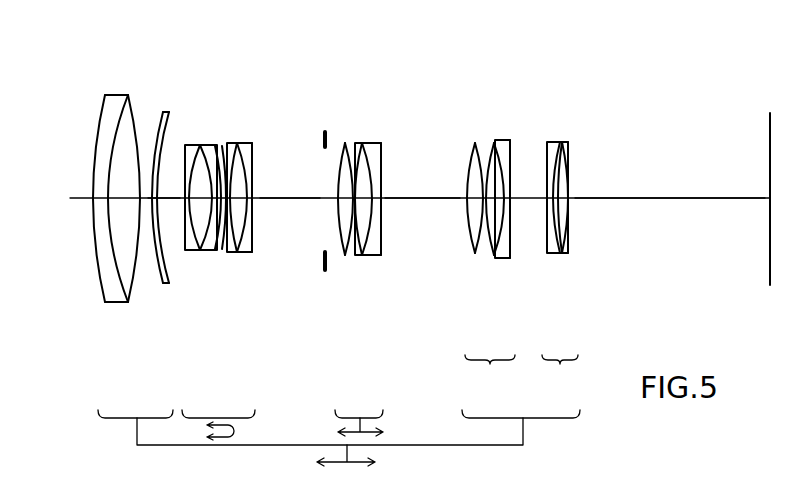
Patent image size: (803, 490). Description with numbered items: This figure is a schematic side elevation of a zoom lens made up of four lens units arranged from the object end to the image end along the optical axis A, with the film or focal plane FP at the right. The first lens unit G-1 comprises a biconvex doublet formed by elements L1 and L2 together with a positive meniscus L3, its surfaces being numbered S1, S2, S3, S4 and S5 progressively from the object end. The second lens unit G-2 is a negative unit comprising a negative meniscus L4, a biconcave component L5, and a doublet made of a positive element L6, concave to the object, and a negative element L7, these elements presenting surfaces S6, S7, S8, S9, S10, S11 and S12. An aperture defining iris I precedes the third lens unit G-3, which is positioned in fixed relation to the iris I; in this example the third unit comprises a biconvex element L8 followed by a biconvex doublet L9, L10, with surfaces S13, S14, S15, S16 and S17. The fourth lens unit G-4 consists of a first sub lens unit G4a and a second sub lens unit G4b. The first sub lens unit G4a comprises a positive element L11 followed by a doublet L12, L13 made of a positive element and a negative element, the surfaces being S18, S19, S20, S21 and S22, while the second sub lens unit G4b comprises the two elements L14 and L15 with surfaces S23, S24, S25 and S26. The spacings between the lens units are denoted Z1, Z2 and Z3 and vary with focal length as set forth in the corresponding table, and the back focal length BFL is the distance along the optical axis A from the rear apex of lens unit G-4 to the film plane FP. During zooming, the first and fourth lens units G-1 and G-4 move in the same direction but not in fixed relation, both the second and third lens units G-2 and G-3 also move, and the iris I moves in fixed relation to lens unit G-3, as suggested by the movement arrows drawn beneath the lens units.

The optical axis A is at (717, 200).
The focal plane FP is at (770, 136).
The back focal length BFL is at (670, 186).
The spacing between lens units Z1 is at (164, 188).
The spacing between lens units Z2 is at (290, 188).
The spacing between lens units Z3 is at (422, 188).
The iris I is at (320, 137).
The first lens unit G-1 is at (172, 45).
The second lens unit G-2 is at (263, 45).
The third lens unit G-3 is at (393, 45).
The fourth lens unit G-4 is at (583, 45).
The first sub lens unit G4a is at (490, 373).
The second sub lens unit G4b is at (560, 373).
The lens element L1 is at (87, 193).
The lens element L2 is at (104, 203).
The positive meniscus L3 is at (156, 226).
The negative meniscus L4 is at (195, 218).
The biconcave component L5 is at (238, 208).
The positive element L6 is at (264, 192).
The negative element L7 is at (271, 195).
The biconvex element L8 is at (360, 218).
The lens element L9 is at (392, 195).
The lens element L10 is at (399, 197).
The positive element L11 is at (458, 205).
The lens element L12 is at (514, 212).
The lens element L13 is at (527, 192).
The lens element L14 is at (593, 200).
The lens element L15 is at (605, 196).
The lens element surface S1 is at (95, 239).
The lens element surface S2 is at (112, 258).
The lens element surface S3 is at (107, 302).
The lens element surface S4 is at (137, 290).
The lens element surface S5 is at (165, 285).
The lens element surface S6 is at (186, 232).
The lens element surface S7 is at (204, 226).
The lens element surface S8 is at (222, 258).
The lens element surface S9 is at (238, 252).
The lens element surface S10 is at (236, 240).
The lens element surface S11 is at (228, 228).
The lens element surface S12 is at (253, 210).
The lens element surface S13 is at (343, 257).
The lens element surface S14 is at (353, 258).
The lens element surface S15 is at (368, 252).
The lens element surface S16 is at (378, 237).
The lens element surface S17 is at (382, 216).
The lens element surface S18 is at (467, 224).
The lens element surface S19 is at (472, 252).
The lens element surface S20 is at (482, 254).
The lens element surface S21 is at (498, 257).
The lens element surface S22 is at (508, 258).
The lens element surface S23 is at (546, 252).
The lens element surface S24 is at (560, 230).
The lens element surface S25 is at (565, 218).
The lens element surface S26 is at (572, 205).